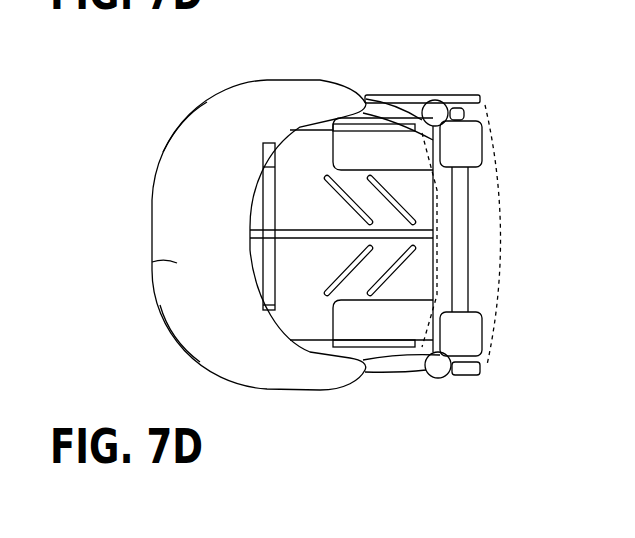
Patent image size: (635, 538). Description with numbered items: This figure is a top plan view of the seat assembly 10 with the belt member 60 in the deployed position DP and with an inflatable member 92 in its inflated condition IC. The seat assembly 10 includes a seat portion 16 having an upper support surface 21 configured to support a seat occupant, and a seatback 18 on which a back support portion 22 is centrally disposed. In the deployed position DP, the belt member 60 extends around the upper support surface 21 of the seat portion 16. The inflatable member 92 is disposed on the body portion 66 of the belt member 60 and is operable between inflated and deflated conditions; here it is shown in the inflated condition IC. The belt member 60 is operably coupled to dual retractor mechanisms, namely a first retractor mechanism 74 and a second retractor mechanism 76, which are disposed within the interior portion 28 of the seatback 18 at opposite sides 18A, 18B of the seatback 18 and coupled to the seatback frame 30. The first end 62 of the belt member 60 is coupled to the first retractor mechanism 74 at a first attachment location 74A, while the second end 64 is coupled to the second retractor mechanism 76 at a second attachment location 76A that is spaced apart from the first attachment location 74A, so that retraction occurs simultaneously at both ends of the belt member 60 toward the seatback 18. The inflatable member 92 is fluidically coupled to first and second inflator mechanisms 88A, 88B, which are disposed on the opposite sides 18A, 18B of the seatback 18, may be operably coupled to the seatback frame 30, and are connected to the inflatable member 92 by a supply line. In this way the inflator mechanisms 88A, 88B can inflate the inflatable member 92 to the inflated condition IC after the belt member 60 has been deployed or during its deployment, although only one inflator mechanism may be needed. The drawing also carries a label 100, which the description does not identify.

The seat assembly 10 is at (342, 67).
The seat portion 16 is at (137, 188).
The upper support surface 21 is at (302, 157).
The back support portion 22 is at (435, 258).
The interior portion 28 is at (492, 278).
The seatback frame 30 is at (473, 230).
The belt member 60 is at (385, 392).
The first end 62 is at (433, 107).
The second end 64 is at (430, 372).
The body portion 66 is at (372, 100).
The first retractor mechanism 74 is at (482, 142).
The first attachment location 74A is at (483, 125).
The second retractor mechanism 76 is at (480, 338).
The second attachment location 76A is at (482, 352).
The seatback 18 is at (507, 297).
The first side 18A is at (480, 100).
The second side 18B is at (467, 372).
The first inflator mechanism 88A is at (447, 100).
The second inflator mechanism 88B is at (450, 370).
The inflatable member 92 is at (152, 262).
The visor 100 is at (207, 103).
The inflated condition IC is at (138, 228).
The deployed position DP is at (145, 293).